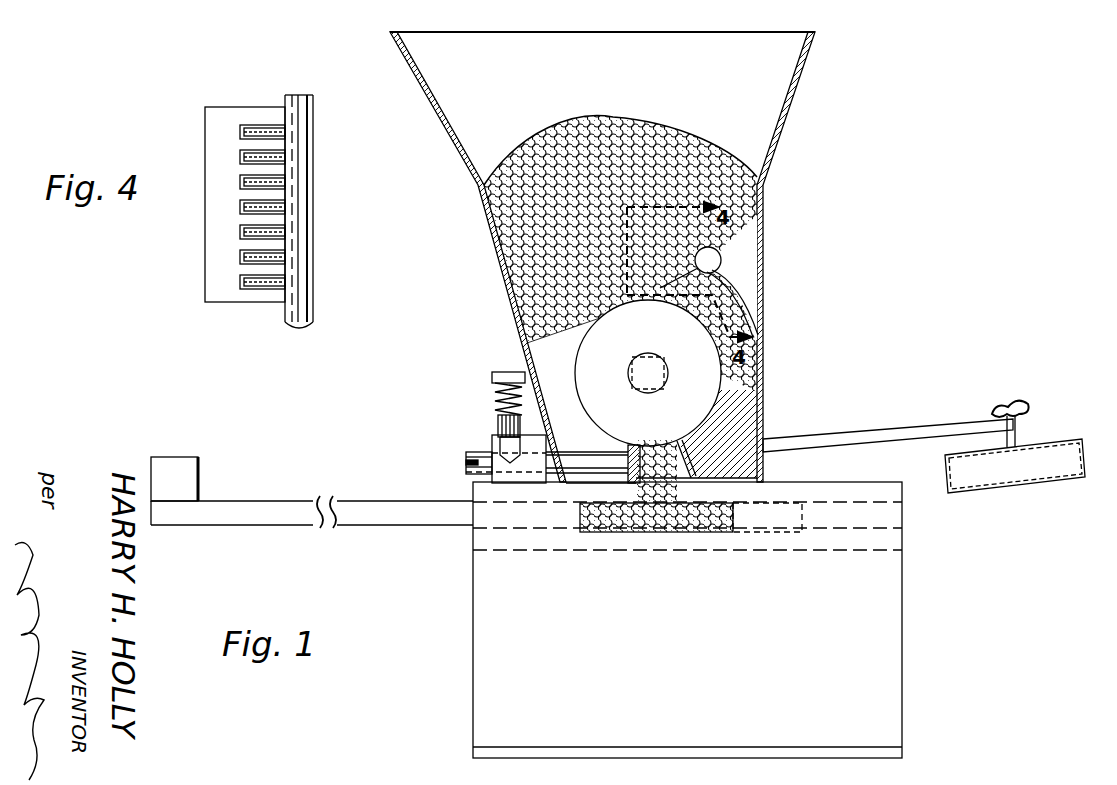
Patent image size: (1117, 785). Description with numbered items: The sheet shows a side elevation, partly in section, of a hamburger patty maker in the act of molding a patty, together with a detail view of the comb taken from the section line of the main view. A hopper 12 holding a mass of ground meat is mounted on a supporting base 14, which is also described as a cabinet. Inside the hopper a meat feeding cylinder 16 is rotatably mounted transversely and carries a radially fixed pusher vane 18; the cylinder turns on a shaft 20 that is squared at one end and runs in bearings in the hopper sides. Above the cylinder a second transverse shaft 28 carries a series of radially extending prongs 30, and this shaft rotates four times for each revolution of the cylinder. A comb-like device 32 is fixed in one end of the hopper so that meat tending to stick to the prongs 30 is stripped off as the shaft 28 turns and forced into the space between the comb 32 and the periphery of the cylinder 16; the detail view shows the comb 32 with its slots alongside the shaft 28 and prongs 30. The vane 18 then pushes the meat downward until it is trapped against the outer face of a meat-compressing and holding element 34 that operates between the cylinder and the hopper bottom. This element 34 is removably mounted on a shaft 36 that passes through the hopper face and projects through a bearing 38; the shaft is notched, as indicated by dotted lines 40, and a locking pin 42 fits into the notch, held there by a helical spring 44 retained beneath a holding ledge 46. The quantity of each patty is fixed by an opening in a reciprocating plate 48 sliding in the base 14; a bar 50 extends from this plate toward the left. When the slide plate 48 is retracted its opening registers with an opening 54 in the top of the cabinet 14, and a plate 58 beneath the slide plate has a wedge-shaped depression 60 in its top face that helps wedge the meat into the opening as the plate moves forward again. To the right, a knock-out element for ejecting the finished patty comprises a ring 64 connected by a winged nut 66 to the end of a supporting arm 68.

In FIG. 1, the hopper 12 is at (764, 300).
In FIG. 1, the supporting base 14 is at (483, 662).
In FIG. 1, the meat feeding cylinder 16 is at (690, 398).
In FIG. 1, the pusher vane 18 is at (686, 462).
In FIG. 1, the shaft 20 is at (631, 376).
In FIG. 1, the shaft 28 is at (712, 262).
In FIG. 4, the shaft 28 is at (310, 212).
In FIG. 4, the prongs 30 is at (282, 133).
In FIG. 1, the comb-like device 32 is at (738, 286).
In FIG. 4, the comb-like device 32 is at (228, 296).
In FIG. 1, the meat-compressing and holding element 34 is at (628, 450).
In FIG. 1, the shaft 36 is at (563, 451).
In FIG. 1, the bearing 38 is at (496, 450).
In FIG. 1, the notch 40 is at (487, 470).
In FIG. 1, the locking pin 42 is at (500, 445).
In FIG. 1, the helical spring 44 is at (497, 395).
In FIG. 1, the holding ledge 46 is at (510, 372).
In FIG. 1, the reciprocating plate 48 is at (432, 520).
In FIG. 1, the end block 50 is at (197, 487).
In FIG. 1, the opening 54 is at (680, 495).
In FIG. 1, the plate 58 is at (783, 542).
In FIG. 1, the wedge-shaped depression 60 is at (662, 538).
In FIG. 1, the ring 64 is at (982, 478).
In FIG. 1, the winged nut 66 is at (997, 403).
In FIG. 1, the supporting arm 68 is at (885, 432).